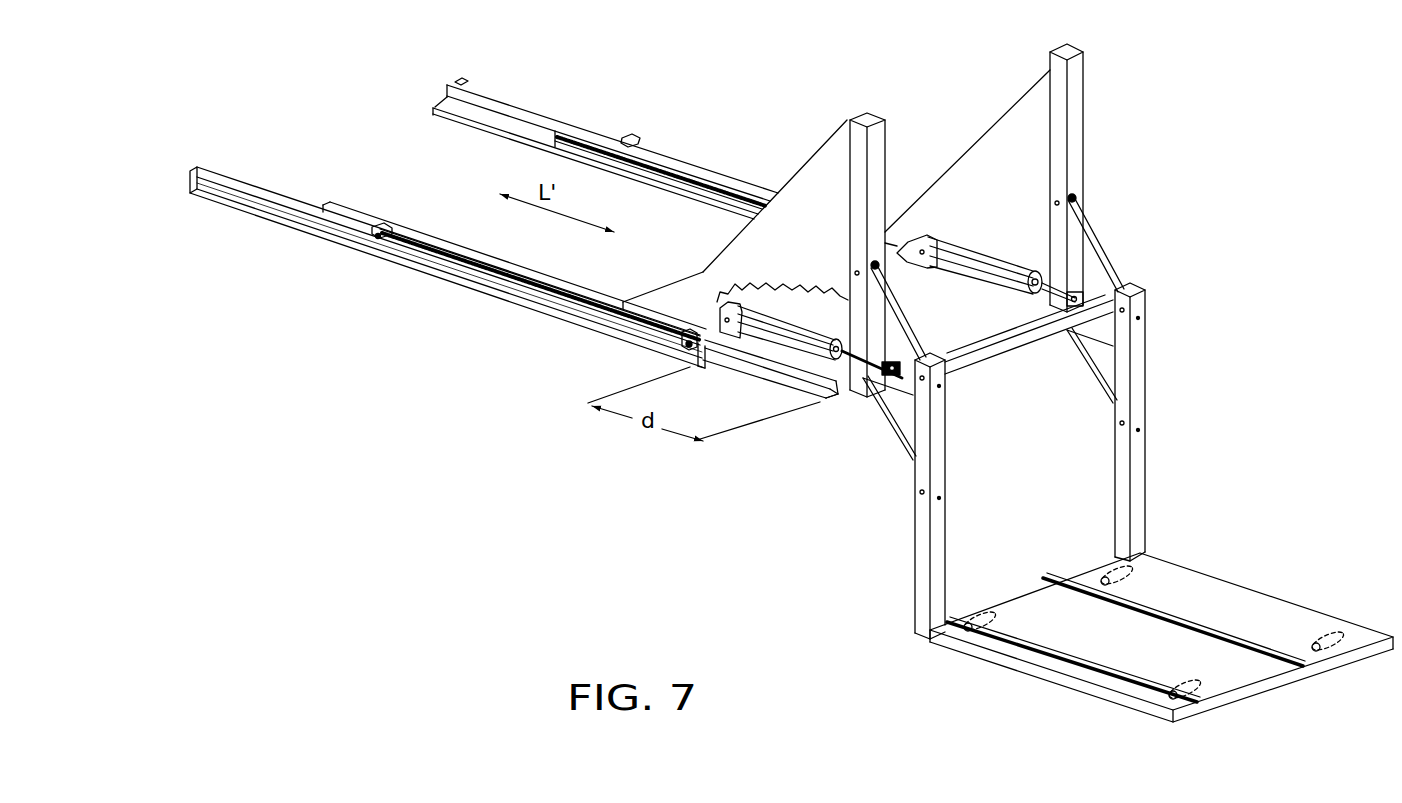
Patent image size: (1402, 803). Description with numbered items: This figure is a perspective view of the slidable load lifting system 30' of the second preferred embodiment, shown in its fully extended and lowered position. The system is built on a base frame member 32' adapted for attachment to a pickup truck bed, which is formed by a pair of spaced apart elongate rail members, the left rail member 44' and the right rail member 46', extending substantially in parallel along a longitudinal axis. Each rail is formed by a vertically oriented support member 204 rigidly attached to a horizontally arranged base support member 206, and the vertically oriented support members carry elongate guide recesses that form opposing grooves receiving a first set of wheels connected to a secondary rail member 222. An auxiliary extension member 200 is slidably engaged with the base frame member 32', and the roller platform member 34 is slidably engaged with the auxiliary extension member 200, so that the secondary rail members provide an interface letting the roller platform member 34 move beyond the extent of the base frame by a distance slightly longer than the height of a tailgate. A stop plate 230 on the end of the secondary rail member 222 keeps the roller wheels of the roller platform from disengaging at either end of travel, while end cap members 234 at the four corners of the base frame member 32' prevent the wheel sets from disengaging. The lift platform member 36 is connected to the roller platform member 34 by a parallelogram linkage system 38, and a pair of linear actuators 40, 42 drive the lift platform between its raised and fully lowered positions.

The slidable load lifting system 30' is at (792, 385).
The end cap members 234 is at (461, 81).
The vertically oriented support member 204 is at (495, 300).
The horizontally arranged base support member 206 is at (442, 283).
The left rail member 44' is at (540, 280).
The base frame member 32' is at (416, 183).
The right rail member 46' is at (660, 173).
The secondary rail member 222 is at (680, 342).
The auxiliary extension member 200 is at (765, 383).
The stop plate 230 is at (831, 401).
The linear actuator 40 is at (780, 328).
The linear actuator 42 is at (975, 272).
The roller platform member 34 is at (1003, 355).
The parallelogram linkage system 38 is at (907, 415).
The lift platform member 36 is at (1280, 680).